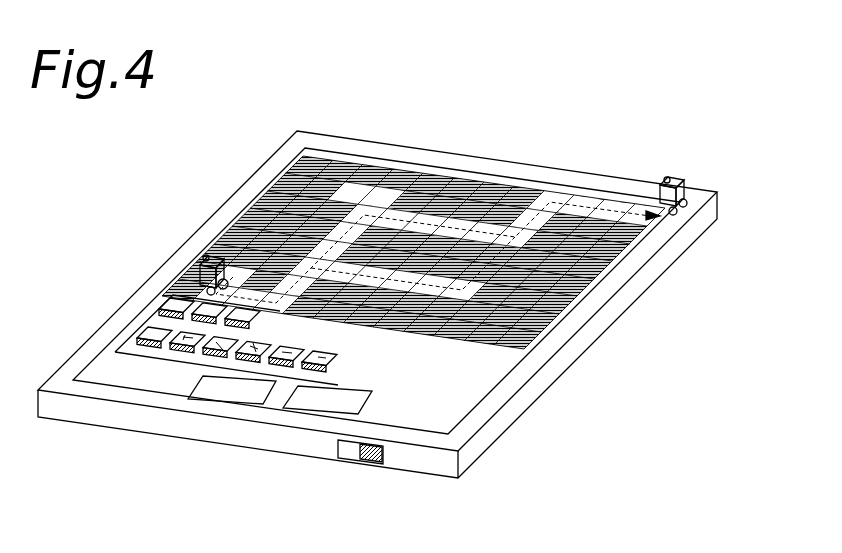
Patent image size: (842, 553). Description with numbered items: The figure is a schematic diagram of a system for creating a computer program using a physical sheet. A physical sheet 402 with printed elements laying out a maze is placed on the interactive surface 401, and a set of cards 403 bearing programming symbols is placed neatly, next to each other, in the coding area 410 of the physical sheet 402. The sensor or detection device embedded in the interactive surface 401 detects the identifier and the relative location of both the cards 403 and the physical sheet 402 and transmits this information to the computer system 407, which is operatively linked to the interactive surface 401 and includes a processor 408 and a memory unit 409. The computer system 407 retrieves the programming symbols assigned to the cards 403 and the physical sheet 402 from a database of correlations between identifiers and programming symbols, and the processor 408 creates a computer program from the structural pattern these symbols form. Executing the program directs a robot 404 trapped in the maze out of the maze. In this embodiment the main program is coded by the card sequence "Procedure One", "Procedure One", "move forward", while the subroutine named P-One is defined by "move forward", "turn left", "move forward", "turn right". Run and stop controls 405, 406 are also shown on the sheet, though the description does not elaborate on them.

The interactive surface 401 is at (717, 212).
The physical sheet 402 is at (302, 165).
The cards 403 is at (150, 320).
The robot 404 is at (198, 266).
The run button 405 is at (205, 397).
The stop button 406 is at (308, 410).
The computer system 407 is at (383, 469).
The processor 408 is at (383, 457).
The memory unit 409 is at (340, 448).
The coding area 410 is at (473, 372).